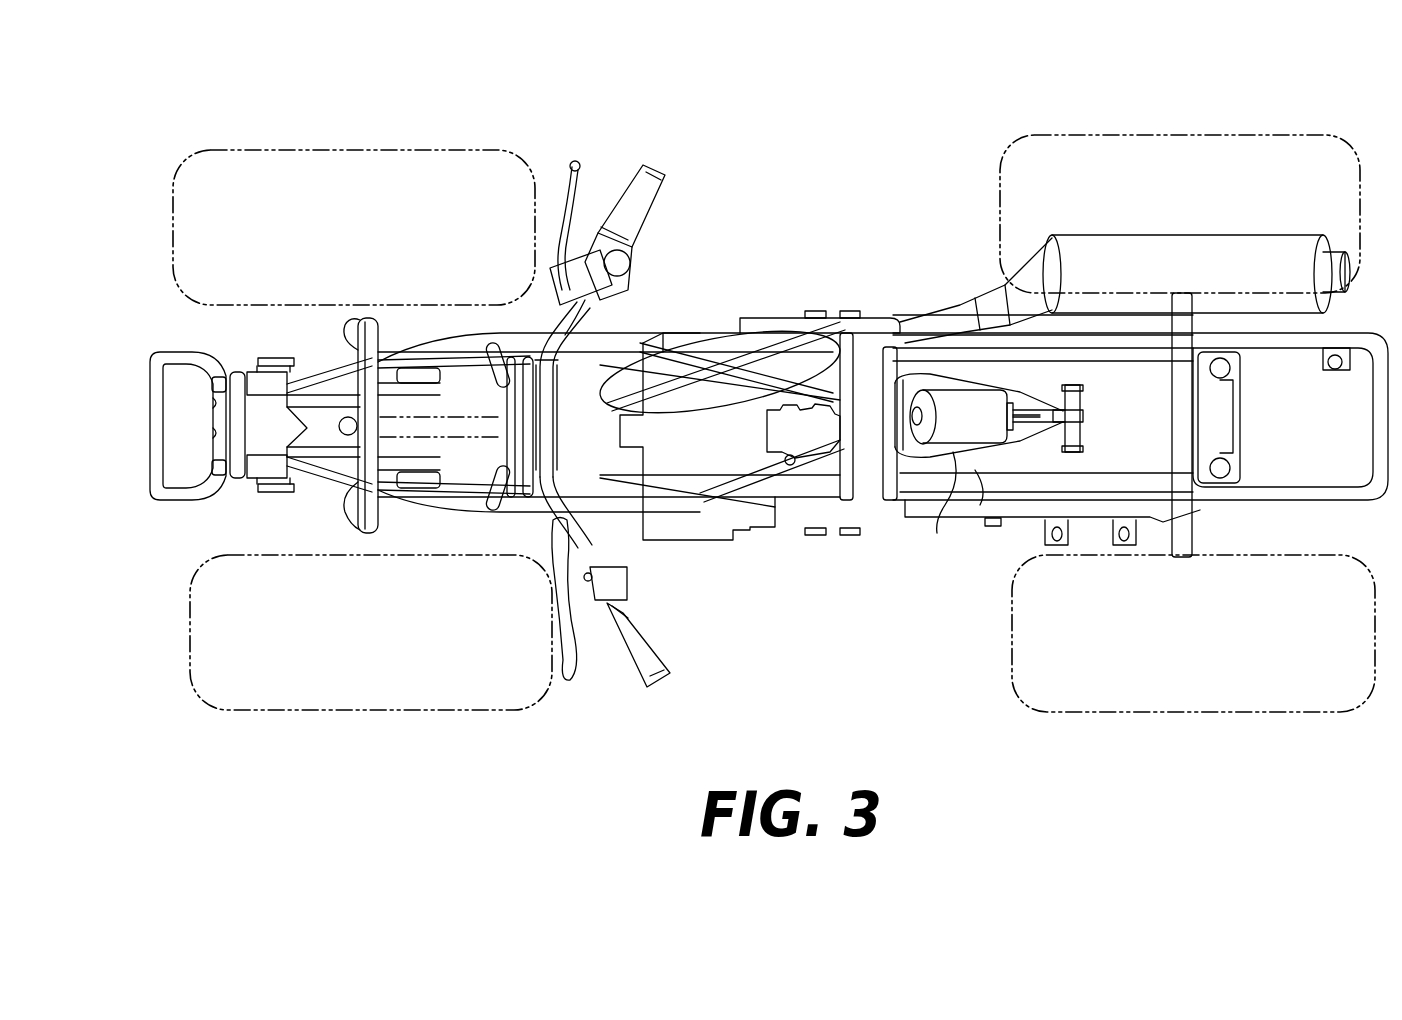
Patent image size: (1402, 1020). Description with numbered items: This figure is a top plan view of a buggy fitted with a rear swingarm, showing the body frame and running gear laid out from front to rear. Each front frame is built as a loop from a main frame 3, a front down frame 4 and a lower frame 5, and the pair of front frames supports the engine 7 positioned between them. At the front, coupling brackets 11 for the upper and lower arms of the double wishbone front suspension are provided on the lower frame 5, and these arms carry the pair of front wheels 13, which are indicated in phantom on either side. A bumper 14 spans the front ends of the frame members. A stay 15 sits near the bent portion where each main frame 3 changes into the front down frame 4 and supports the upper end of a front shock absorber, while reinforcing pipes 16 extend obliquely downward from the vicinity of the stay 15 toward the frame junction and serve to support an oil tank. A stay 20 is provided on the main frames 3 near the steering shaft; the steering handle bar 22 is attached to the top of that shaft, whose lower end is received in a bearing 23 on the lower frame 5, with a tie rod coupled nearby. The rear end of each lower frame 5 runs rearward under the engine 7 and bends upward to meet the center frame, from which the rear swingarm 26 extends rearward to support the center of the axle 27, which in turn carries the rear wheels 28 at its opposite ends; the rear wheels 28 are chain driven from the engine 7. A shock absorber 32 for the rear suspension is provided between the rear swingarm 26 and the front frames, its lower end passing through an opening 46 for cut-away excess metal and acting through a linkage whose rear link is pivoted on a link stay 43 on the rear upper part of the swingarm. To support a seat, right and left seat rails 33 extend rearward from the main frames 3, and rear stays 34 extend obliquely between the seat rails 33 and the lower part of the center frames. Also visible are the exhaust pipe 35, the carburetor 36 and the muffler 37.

The main frame 3 is at (605, 424).
The front down frame 4 is at (301, 401).
The lower frame 5 is at (639, 413).
The engine 7 is at (697, 465).
The coupling bracket 11 is at (253, 423).
The front wheel 13 is at (362, 427).
The bumper 14 is at (155, 407).
The stay 15 is at (339, 432).
The reinforcing pipe 16 is at (454, 428).
The stay 20 is at (552, 427).
The steering handle bar 22 is at (561, 415).
The bearing 23 is at (317, 351).
The rear swingarm 26 is at (979, 475).
The axle 27 is at (1112, 417).
The rear wheel 28 is at (1187, 424).
The shock absorber 32 is at (987, 402).
The seat rail 33 is at (1140, 425).
The rear stay 34 is at (1046, 407).
The exhaust pipe 35 is at (720, 352).
The carburetor 36 is at (778, 430).
The muffler 37 is at (1125, 260).
The link stay 43 is at (1107, 421).
The opening 46 is at (937, 514).